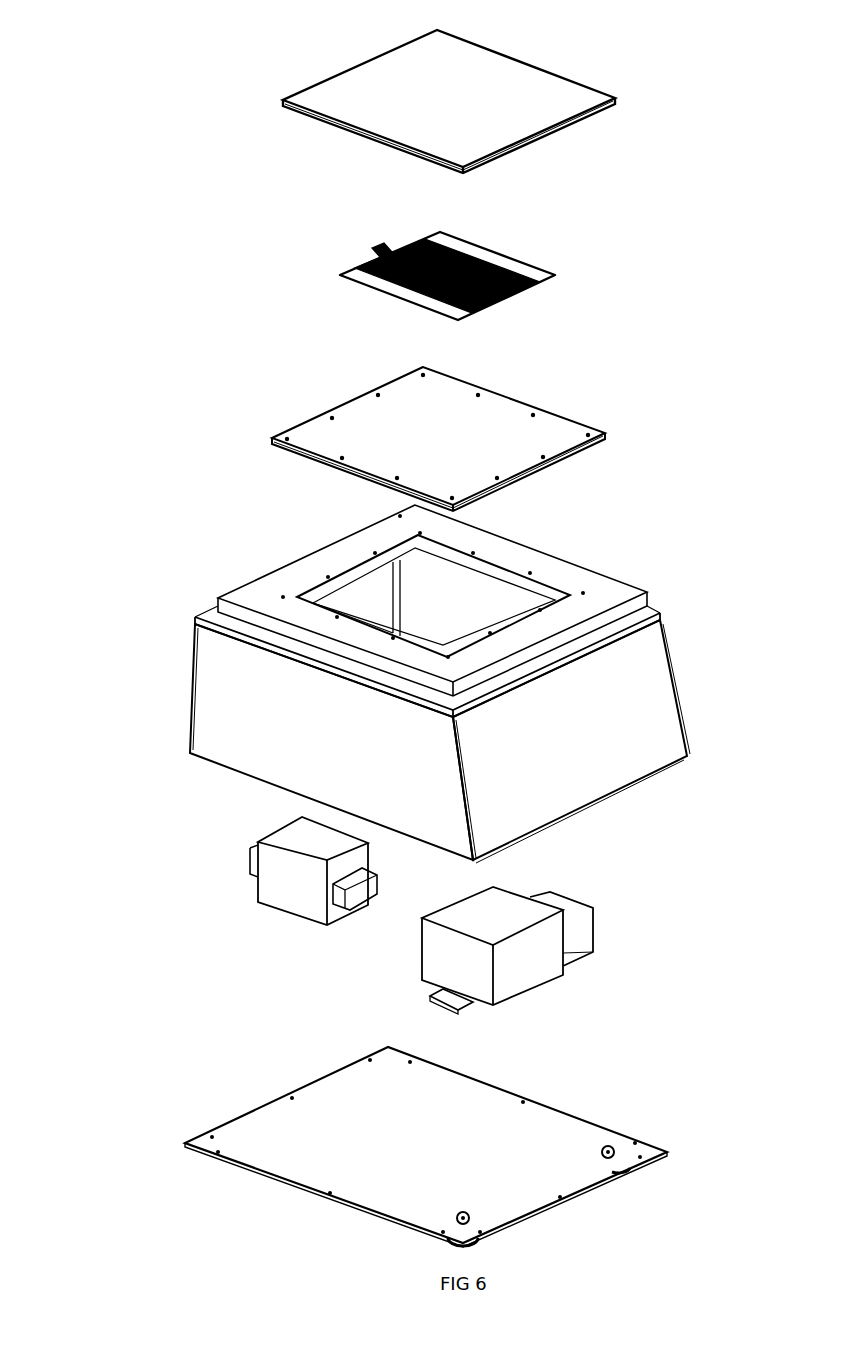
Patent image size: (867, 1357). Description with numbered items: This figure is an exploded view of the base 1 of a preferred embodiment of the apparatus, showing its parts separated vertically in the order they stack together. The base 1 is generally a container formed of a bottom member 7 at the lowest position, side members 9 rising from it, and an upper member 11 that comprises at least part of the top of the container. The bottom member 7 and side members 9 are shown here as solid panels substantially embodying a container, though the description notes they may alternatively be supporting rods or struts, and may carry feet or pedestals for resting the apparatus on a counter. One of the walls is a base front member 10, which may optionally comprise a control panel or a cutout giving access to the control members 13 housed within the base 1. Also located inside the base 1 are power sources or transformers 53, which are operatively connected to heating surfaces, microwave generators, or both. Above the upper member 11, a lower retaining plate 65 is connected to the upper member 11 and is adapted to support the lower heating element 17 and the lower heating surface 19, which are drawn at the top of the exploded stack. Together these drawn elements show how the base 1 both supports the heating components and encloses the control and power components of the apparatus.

The base 1 is at (648, 688).
The bottom member 7 is at (232, 1122).
The side members 9 is at (218, 715).
The base front member 10 is at (655, 736).
The upper member 11 is at (260, 573).
The control members 13 is at (420, 965).
The lower heating element 17 is at (313, 84).
The lower heating surface 19 is at (340, 270).
The power sources or transformers 53 is at (268, 838).
The lower retaining plate 65 is at (300, 420).